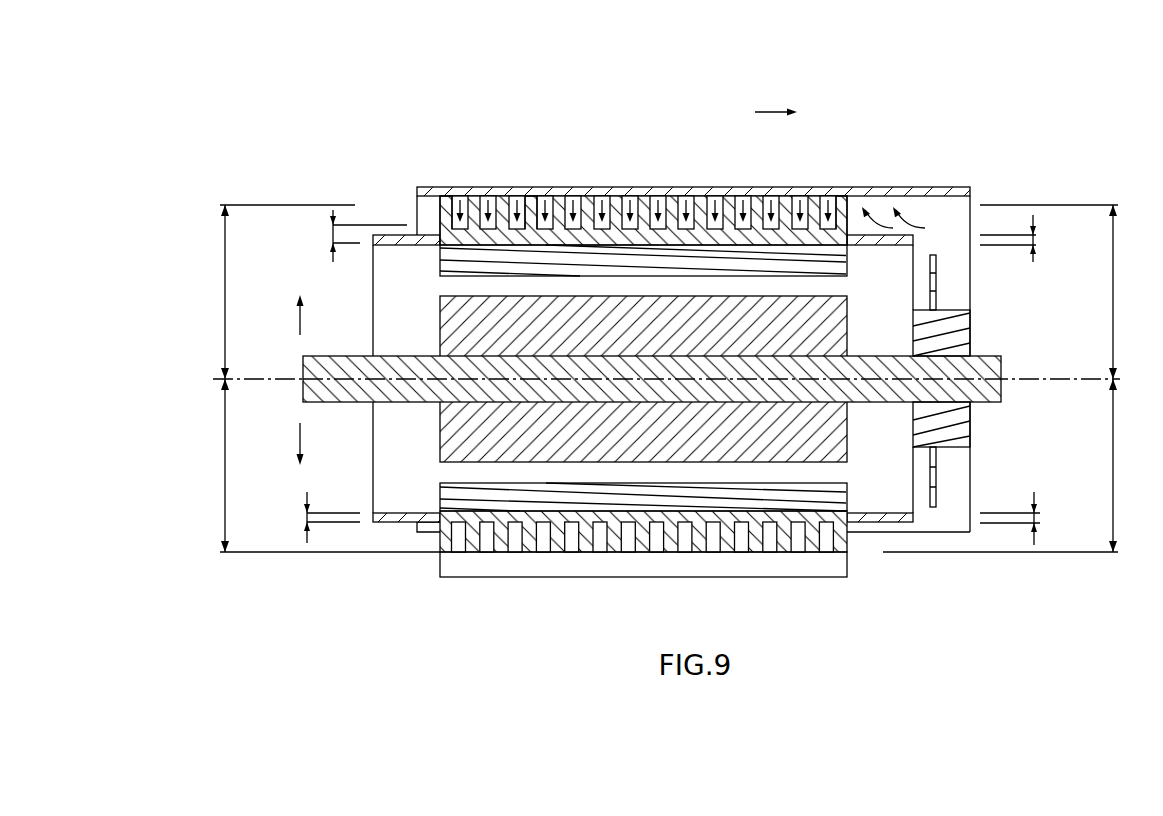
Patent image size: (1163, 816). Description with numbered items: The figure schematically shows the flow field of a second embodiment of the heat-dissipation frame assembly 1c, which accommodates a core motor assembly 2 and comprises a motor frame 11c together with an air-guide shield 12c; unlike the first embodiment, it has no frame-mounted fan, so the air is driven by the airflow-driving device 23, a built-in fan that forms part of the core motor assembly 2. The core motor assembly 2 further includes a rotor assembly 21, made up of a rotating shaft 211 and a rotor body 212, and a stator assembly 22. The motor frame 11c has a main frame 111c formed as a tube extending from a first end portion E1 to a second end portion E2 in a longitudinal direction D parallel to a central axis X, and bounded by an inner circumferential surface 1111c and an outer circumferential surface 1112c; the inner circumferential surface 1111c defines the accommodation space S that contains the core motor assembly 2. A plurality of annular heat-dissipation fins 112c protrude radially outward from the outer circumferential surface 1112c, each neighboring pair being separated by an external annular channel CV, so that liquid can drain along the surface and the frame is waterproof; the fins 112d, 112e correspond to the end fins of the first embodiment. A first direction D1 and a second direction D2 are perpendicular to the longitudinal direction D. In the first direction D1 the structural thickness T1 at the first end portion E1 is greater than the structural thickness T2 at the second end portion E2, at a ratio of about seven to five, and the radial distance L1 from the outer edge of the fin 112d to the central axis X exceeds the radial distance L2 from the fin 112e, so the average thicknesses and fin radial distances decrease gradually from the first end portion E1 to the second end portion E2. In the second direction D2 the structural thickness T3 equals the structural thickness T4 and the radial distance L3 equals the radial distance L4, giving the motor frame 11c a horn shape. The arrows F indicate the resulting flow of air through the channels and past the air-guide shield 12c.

The heat-dissipation frame assembly 1c is at (1014, 82).
The motor frame 11c is at (657, 342).
The main frame 111c is at (663, 168).
The inner circumferential surface 1111c is at (593, 197).
The outer circumferential surface 1112c is at (728, 189).
The annular heat-dissipation fins 112c is at (530, 197).
The annular heat-dissipation fin 112d is at (445, 195).
The annular heat-dissipation fin 112e is at (844, 212).
The air-guide shield 12c is at (808, 187).
The core motor assembly 2 is at (701, 379).
The rotor assembly 21 is at (701, 385).
The rotating shaft 211 is at (677, 379).
The rotor body 212 is at (847, 428).
The stator assembly 22 is at (842, 503).
The airflow-driving device 23 is at (967, 330).
The external annular channel CV is at (799, 540).
The accommodation space S is at (410, 322).
The fluid flow F is at (920, 222).
The longitudinal direction D is at (776, 105).
The first end portion E1 is at (373, 198).
The second end portion E2 is at (903, 172).
The central axis X is at (252, 382).
The radial distance L1 is at (276, 292).
The radial distance L2 is at (1059, 292).
The radial distance L3 is at (319, 465).
The radial distance L4 is at (1011, 465).
The structural thickness T1 is at (354, 236).
The structural thickness T2 is at (1021, 238).
The structural thickness T3 is at (320, 517).
The structural thickness T4 is at (1021, 518).
The first direction D1 is at (286, 315).
The second direction D2 is at (287, 444).